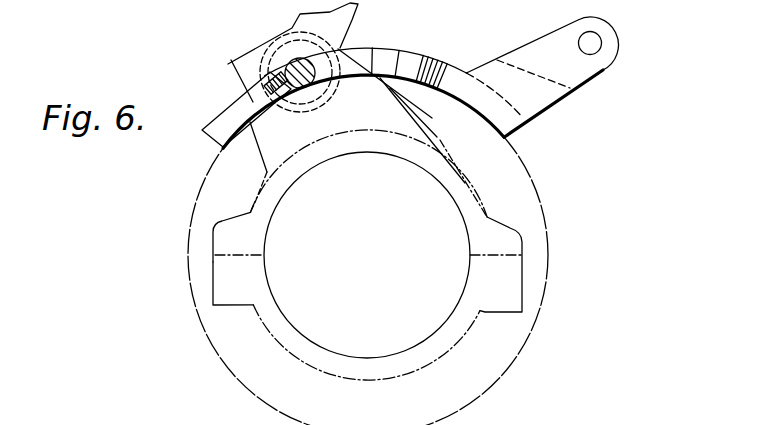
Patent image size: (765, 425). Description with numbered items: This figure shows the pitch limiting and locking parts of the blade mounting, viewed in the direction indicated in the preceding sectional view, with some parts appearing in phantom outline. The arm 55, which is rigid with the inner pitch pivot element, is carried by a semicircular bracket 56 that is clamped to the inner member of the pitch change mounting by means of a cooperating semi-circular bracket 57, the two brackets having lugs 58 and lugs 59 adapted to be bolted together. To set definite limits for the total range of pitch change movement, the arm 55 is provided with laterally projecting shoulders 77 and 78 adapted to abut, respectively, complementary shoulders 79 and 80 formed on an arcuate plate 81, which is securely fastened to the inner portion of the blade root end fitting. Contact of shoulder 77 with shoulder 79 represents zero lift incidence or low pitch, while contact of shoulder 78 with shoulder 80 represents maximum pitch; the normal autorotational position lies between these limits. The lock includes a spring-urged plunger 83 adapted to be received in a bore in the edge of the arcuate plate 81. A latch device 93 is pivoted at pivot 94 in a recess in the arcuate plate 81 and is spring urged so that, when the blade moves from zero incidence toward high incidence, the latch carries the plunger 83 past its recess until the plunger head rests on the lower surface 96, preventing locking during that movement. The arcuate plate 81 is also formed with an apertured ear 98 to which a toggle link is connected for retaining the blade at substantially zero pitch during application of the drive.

The arm 55 is at (223, 150).
The semicircular bracket 56 is at (257, 203).
The cooperating semi-circular bracket 57 is at (365, 384).
The lugs 58 is at (216, 242).
The lugs 59 is at (216, 288).
The laterally projecting shoulder 77 is at (262, 85).
The laterally projecting shoulder 78 is at (388, 57).
The complementary shoulder 79 is at (238, 104).
The complementary shoulder 80 is at (398, 52).
The arcuate plate 81 is at (447, 73).
The plunger 83 is at (305, 82).
The latch device 93 is at (270, 80).
The pivot 94 is at (275, 32).
The lower surface 96 is at (343, 42).
The apertured ear 98 is at (540, 38).